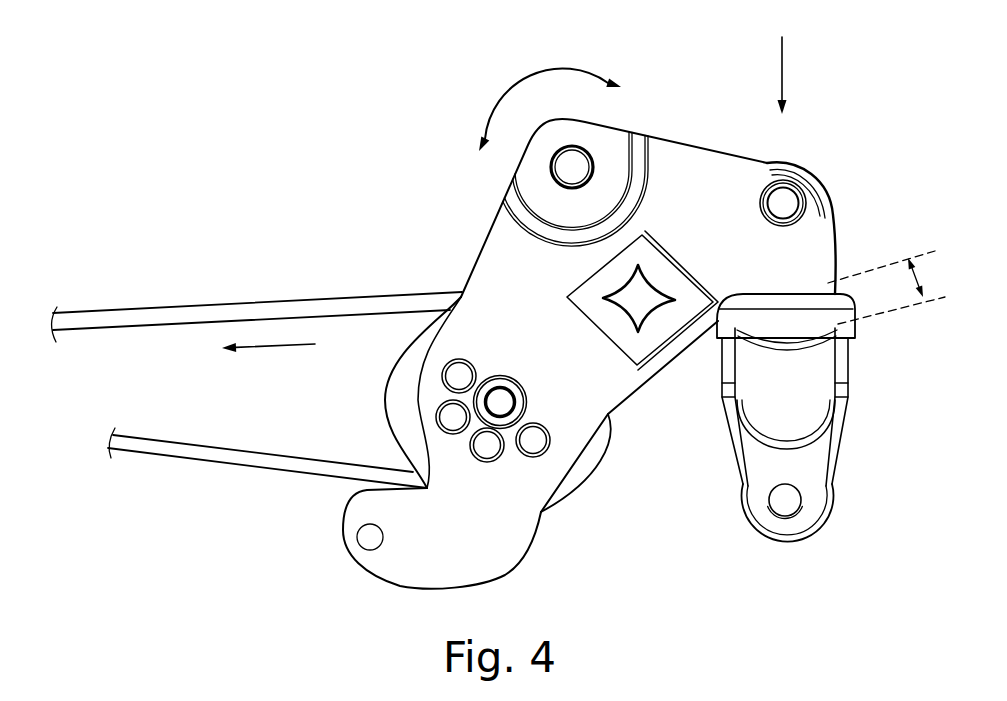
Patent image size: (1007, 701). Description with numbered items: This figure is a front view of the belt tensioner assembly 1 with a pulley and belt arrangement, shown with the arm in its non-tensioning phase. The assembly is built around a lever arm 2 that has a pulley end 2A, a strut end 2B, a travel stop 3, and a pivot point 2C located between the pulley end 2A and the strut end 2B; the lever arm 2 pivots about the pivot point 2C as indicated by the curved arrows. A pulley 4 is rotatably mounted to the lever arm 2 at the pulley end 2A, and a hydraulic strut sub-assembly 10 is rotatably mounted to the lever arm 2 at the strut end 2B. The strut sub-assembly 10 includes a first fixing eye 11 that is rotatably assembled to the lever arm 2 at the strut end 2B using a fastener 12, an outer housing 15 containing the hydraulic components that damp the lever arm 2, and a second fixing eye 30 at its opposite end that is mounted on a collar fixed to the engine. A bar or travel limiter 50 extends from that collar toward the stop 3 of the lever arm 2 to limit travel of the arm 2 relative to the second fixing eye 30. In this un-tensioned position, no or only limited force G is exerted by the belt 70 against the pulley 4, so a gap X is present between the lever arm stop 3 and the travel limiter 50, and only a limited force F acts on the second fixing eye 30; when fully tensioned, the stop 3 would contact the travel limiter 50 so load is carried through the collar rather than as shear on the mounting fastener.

The belt tensioner assembly 1 is at (398, 150).
The lever arm 2 is at (702, 163).
The pulley end 2A is at (523, 513).
The strut end 2B is at (753, 165).
The pivot point 2C is at (607, 147).
The travel stop 3 is at (787, 291).
The pulley 4 is at (580, 470).
The hydraulic strut sub-assembly 10 is at (862, 365).
The first fixing eye 11 is at (803, 167).
The fastener 12 is at (784, 202).
The outer housing 15 is at (840, 390).
The second fixing eye 30 is at (783, 542).
The travel limiter 50 is at (787, 407).
The belt 70 is at (260, 300).